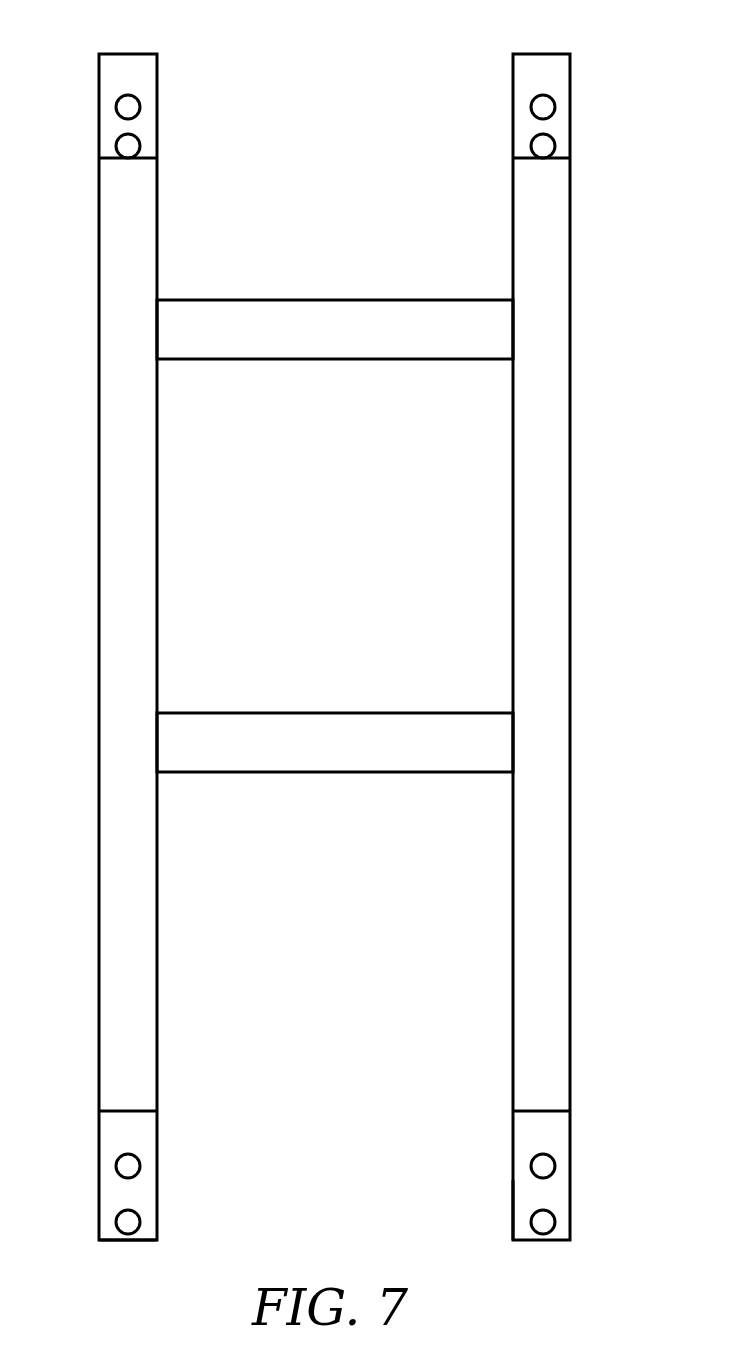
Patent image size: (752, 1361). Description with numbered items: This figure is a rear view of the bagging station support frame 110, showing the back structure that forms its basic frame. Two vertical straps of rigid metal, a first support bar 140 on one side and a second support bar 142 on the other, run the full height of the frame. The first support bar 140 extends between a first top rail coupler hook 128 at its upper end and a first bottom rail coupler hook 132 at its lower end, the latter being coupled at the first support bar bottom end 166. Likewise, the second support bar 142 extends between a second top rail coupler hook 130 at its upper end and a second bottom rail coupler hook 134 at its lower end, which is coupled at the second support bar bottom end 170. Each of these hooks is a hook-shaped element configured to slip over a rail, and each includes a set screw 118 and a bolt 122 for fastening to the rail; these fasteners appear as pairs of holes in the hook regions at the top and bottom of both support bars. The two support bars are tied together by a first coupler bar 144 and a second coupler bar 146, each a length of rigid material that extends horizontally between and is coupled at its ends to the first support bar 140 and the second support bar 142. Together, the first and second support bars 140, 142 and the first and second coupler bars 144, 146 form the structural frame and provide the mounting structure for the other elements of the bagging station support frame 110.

The bagging station support frame 110 is at (349, 86).
The set screw 118 is at (118, 107).
The bolt 122 is at (118, 146).
The first top rail coupler hook 128 is at (563, 68).
The second top rail coupler hook 130 is at (105, 68).
The first bottom rail coupler hook 132 is at (563, 1122).
The second bottom rail coupler hook 134 is at (105, 1123).
The first support bar 140 is at (562, 642).
The second support bar 142 is at (105, 670).
The first coupler bar 144 is at (330, 312).
The second coupler bar 146 is at (330, 725).
The first support bar bottom end 166 is at (517, 1210).
The second support bar bottom end 170 is at (148, 1232).